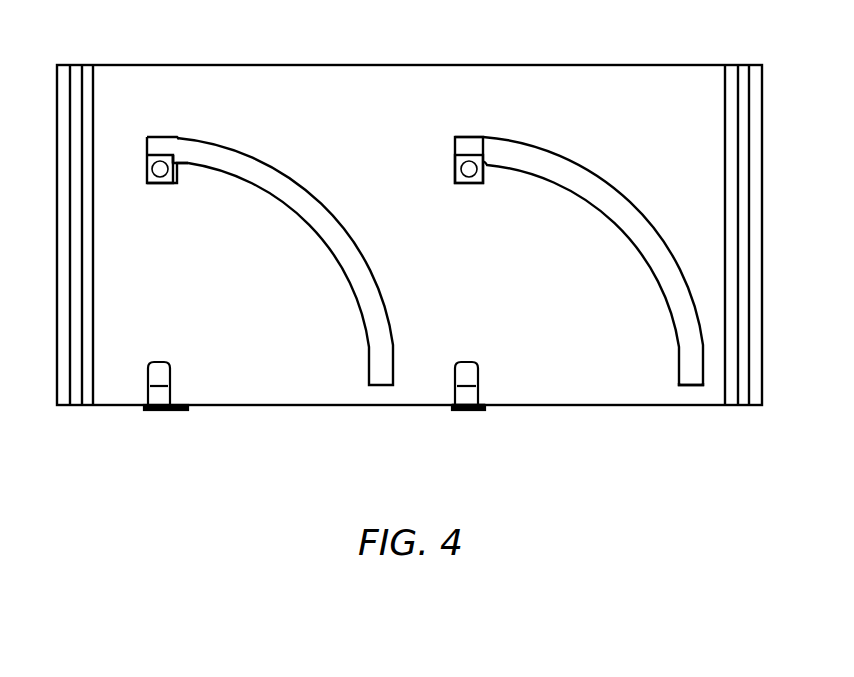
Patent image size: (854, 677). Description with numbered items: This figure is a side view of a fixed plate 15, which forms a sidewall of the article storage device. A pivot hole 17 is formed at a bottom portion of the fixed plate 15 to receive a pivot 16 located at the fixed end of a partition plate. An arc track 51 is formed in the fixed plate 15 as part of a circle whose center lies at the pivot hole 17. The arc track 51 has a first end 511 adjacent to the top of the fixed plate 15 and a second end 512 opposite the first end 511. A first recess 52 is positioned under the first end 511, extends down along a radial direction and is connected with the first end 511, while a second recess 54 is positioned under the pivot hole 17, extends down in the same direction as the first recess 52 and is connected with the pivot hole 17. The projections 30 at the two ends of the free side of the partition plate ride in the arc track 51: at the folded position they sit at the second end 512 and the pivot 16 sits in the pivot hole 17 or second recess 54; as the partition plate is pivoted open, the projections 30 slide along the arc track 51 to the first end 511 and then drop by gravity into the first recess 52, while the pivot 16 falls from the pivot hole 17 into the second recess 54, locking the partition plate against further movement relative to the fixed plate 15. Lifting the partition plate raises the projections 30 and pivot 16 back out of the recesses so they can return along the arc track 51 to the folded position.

The fixed plate 15 is at (702, 62).
The pivot 16 is at (158, 392).
The pivot hole 17 is at (170, 372).
The projection 30 is at (160, 169).
The arc track 51 is at (271, 161).
The first recess 52 is at (455, 180).
The second recess 54 is at (452, 405).
The first end 511 is at (468, 146).
The second end 512 is at (688, 366).